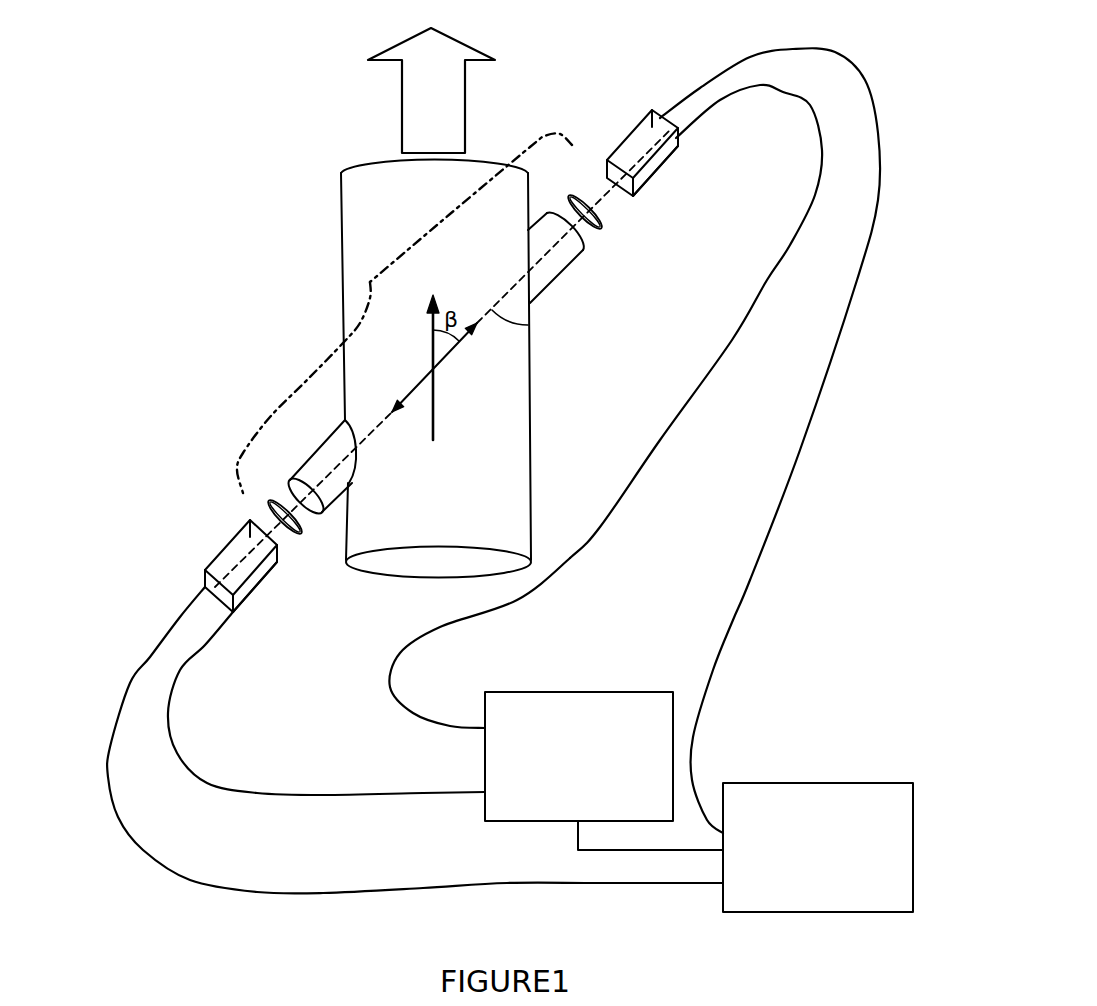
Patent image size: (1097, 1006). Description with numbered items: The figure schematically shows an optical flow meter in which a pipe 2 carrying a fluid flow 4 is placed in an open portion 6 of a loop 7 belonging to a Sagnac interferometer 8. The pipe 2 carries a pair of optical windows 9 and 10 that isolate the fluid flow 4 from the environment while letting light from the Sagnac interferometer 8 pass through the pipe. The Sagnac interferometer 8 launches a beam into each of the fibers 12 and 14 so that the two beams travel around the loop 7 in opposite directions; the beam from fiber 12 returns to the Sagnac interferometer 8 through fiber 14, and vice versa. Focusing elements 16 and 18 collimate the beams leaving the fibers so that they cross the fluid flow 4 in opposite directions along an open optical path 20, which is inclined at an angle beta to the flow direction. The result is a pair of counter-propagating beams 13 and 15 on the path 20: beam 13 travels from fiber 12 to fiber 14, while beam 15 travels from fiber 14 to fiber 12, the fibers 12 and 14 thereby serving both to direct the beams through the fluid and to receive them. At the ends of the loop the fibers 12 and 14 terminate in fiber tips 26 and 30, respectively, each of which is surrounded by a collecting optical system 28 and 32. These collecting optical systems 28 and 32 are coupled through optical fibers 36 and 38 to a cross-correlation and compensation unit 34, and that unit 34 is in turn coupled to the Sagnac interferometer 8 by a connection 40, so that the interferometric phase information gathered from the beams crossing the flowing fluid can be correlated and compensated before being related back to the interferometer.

The pipe 2 is at (535, 414).
The fluid flow 4 is at (400, 139).
The open portion 6 is at (368, 282).
The loop 7 is at (210, 916).
The Sagnac interferometer 8 is at (817, 800).
The optical window 9 is at (326, 515).
The optical window 10 is at (582, 252).
The fiber 12 is at (130, 686).
The beam 13 is at (468, 332).
The fiber 14 is at (787, 48).
The beam 15 is at (403, 396).
The focusing element 16 is at (297, 530).
The focusing element 18 is at (596, 228).
The open optical path 20 is at (530, 326).
The fiber tip 26 is at (232, 548).
The collecting optical system 28 is at (253, 583).
The fiber tip 30 is at (626, 160).
The collecting optical system 32 is at (668, 167).
The cross-correlation and compensation unit 34 is at (597, 691).
The optical fiber 36 is at (347, 793).
The optical fiber 38 is at (732, 342).
The connection 40 is at (578, 850).